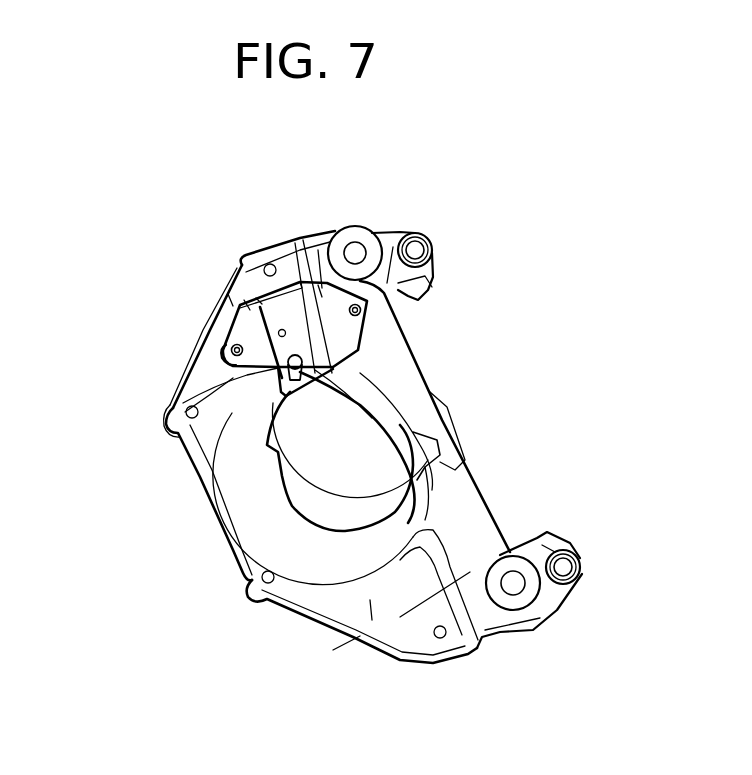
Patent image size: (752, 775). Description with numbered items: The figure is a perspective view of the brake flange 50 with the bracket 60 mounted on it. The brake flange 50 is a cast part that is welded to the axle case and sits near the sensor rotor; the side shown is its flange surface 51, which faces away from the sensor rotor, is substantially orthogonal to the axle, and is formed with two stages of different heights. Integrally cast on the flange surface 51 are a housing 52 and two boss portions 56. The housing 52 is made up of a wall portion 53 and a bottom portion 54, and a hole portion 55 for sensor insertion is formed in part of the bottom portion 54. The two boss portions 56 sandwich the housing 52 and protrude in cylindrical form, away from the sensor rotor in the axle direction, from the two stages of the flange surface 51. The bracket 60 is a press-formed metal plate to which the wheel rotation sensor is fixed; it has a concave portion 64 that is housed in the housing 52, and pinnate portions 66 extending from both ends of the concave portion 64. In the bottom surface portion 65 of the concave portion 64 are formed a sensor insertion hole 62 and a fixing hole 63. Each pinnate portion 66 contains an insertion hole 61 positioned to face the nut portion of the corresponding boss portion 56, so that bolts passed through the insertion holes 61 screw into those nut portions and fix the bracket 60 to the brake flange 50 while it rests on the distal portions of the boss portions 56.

The brake flange 50 is at (208, 452).
The flange surface 51 is at (348, 595).
The housing 52 is at (262, 299).
The wall portion 53 is at (282, 330).
The bottom portion 54 is at (258, 300).
The hole portion 55 is at (220, 338).
The boss portion 56 is at (275, 357).
The bracket 60 is at (227, 318).
The insertion hole 61 is at (231, 350).
The sensor insertion hole 62 is at (192, 399).
The fixing hole 63 is at (249, 304).
The concave portion 64 is at (333, 383).
The bottom surface portion 65 is at (343, 413).
The pinnate portion 66 is at (320, 292).